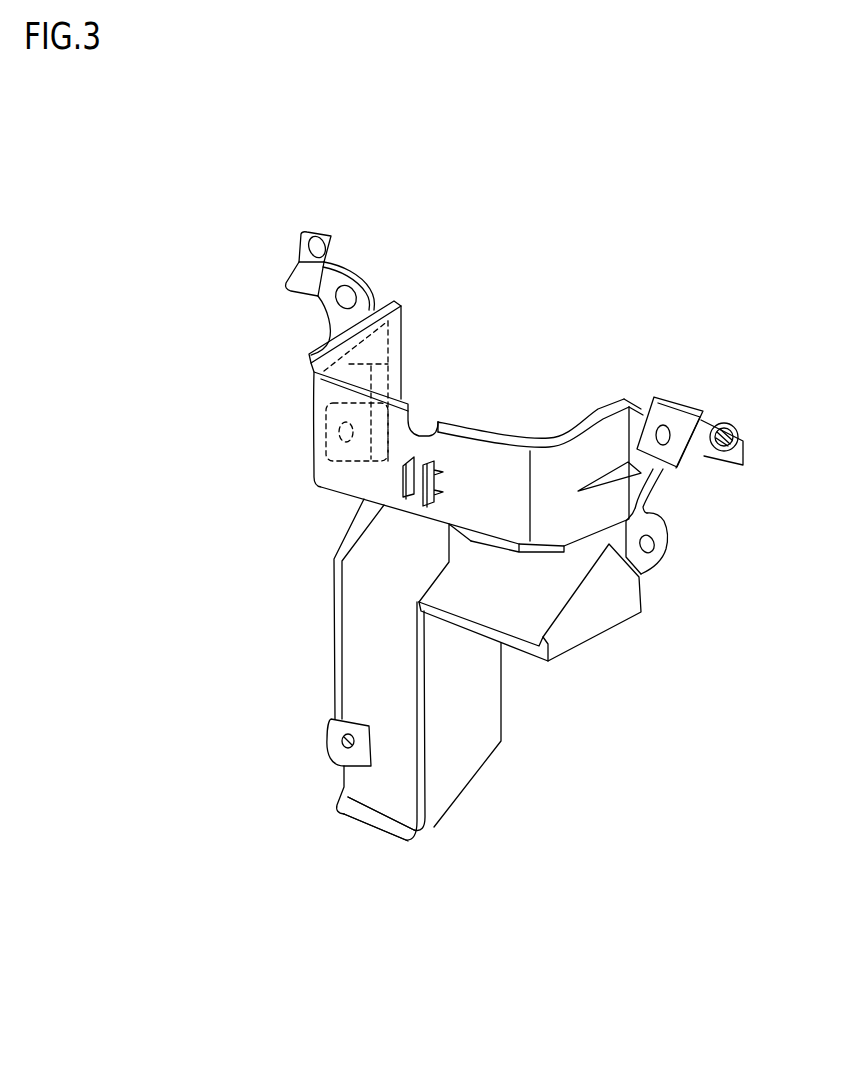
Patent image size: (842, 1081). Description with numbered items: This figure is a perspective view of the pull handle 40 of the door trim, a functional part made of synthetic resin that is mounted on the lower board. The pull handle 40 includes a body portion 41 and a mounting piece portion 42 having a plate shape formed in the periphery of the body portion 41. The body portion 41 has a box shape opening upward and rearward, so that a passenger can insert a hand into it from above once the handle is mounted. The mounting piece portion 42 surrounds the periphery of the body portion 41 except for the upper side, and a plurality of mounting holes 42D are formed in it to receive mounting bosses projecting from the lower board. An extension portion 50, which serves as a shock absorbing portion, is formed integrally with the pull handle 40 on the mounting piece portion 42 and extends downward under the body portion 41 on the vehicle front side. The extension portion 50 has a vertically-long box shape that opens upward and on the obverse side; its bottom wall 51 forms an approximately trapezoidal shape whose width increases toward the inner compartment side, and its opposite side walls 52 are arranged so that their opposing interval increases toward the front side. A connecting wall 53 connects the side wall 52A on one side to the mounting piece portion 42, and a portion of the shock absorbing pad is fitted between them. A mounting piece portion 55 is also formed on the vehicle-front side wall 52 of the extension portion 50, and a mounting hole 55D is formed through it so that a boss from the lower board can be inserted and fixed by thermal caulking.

The pull handle 40 is at (280, 347).
The body portion 41 is at (512, 457).
The mounting piece portion 42 is at (330, 440).
The mounting holes 42D is at (363, 300).
The extension portion 50 is at (451, 721).
The bottom wall 51 is at (400, 802).
The side walls 52 is at (366, 633).
The side wall 52A is at (460, 728).
The connecting wall 53 is at (532, 618).
The mounting piece portion 55 is at (345, 760).
The mounting hole 55D is at (343, 747).